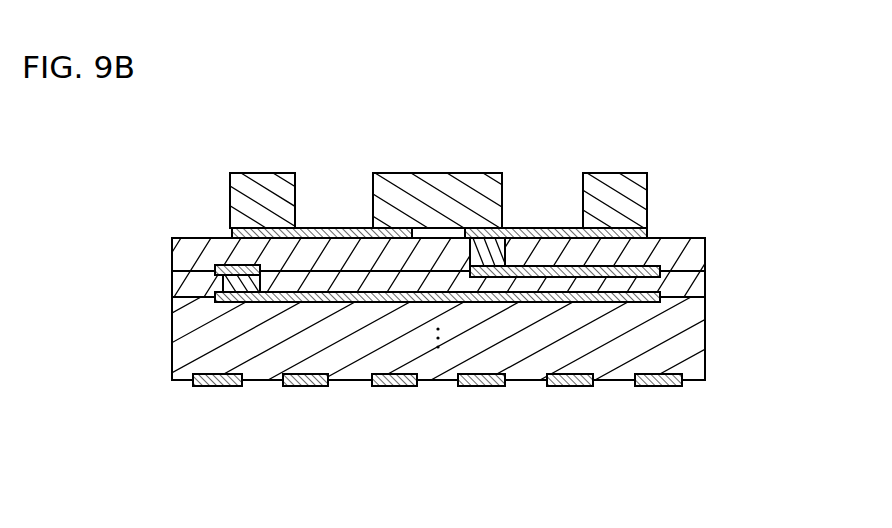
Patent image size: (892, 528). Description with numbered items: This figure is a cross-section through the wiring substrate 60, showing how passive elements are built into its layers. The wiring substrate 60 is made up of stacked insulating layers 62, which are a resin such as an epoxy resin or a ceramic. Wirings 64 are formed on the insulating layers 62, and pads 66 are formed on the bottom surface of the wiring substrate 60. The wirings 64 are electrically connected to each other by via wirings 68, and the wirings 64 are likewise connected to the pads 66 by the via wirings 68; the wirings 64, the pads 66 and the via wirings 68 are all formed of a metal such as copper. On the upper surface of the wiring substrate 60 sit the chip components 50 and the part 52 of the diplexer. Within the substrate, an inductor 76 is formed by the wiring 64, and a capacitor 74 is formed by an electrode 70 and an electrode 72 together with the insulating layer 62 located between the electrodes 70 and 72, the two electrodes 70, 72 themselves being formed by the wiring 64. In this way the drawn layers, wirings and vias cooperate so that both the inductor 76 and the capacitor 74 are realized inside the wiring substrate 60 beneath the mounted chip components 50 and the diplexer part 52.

The chip component 50 is at (264, 173).
The part of the diplexer 52 is at (437, 173).
The wiring substrate 60 is at (452, 310).
The insulating layer 62 is at (461, 269).
The wiring 64 is at (335, 228).
The pad 66 is at (308, 387).
The via wiring 68 is at (236, 302).
The electrode 70 is at (503, 302).
The electrode 72 is at (562, 302).
The capacitor 74 is at (572, 450).
The inductor 76 is at (372, 302).